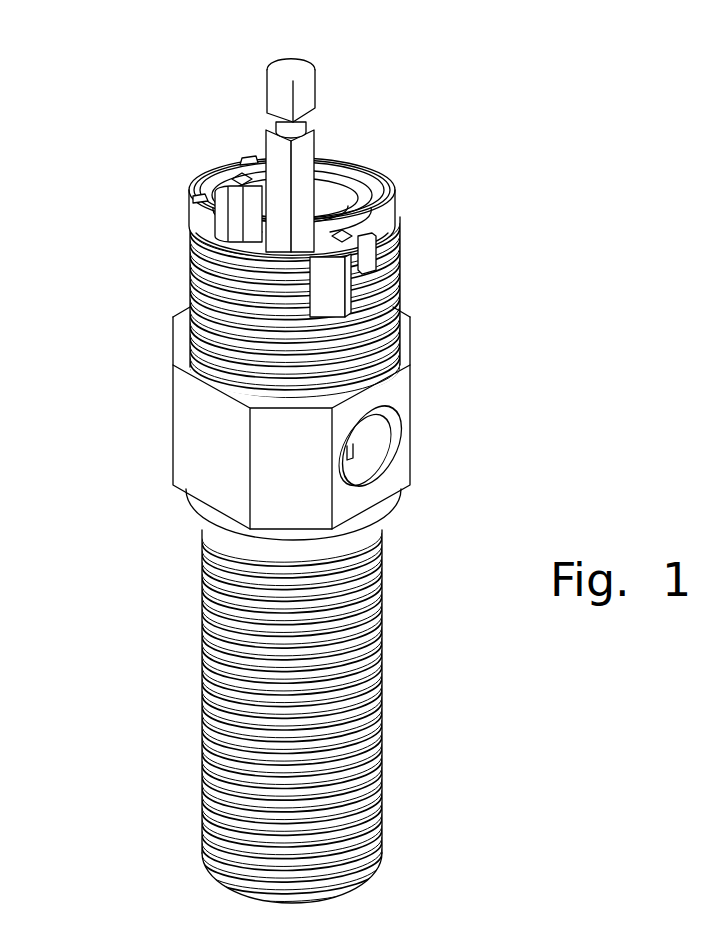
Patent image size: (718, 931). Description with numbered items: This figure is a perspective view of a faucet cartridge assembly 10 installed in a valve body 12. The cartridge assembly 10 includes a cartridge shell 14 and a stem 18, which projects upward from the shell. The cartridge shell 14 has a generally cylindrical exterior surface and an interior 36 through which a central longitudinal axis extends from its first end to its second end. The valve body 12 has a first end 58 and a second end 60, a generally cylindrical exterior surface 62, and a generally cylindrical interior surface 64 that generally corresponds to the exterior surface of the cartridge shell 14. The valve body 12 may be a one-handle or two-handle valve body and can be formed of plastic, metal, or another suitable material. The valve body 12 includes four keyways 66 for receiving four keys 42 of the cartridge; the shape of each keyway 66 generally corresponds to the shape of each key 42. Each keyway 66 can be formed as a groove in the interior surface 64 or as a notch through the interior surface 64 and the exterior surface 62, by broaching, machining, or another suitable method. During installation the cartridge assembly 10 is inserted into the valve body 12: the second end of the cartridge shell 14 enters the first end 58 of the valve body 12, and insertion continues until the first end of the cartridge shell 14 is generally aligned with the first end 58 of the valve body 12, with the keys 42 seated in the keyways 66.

The cartridge assembly 10 is at (279, 479).
The valve body 12 is at (146, 460).
The cartridge shell 14 is at (225, 233).
The stem 18 is at (317, 92).
The interior 36 is at (327, 188).
The keys 42 is at (248, 158).
The first end 58 is at (404, 204).
The second end 60 is at (395, 865).
The exterior surface 62 is at (203, 653).
The interior surface 64 is at (352, 190).
The keyways 66 is at (398, 288).